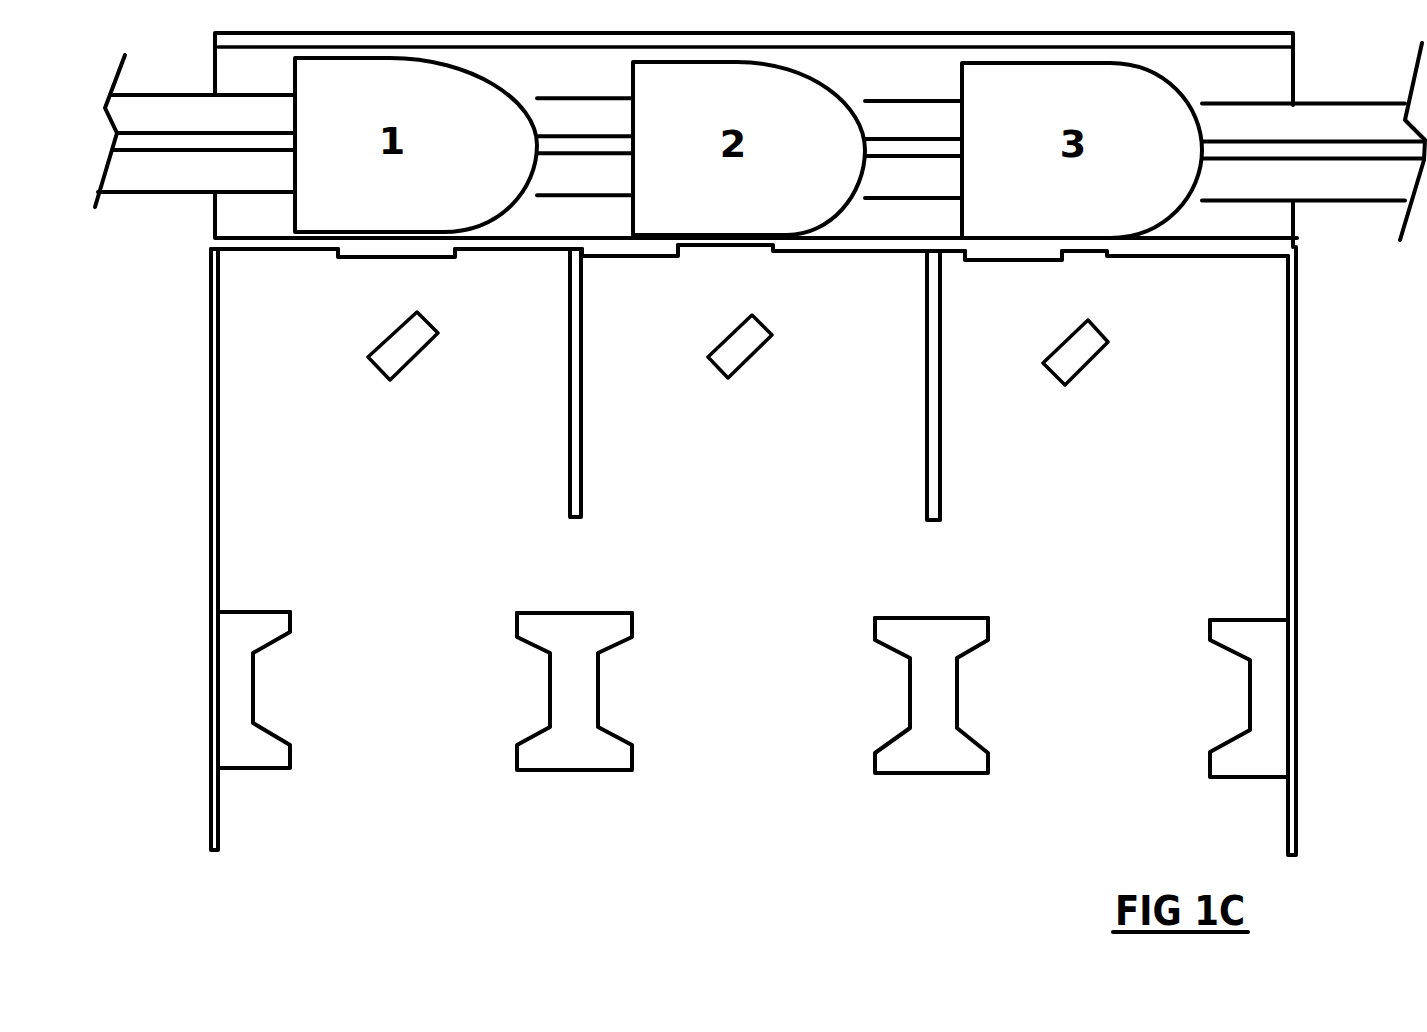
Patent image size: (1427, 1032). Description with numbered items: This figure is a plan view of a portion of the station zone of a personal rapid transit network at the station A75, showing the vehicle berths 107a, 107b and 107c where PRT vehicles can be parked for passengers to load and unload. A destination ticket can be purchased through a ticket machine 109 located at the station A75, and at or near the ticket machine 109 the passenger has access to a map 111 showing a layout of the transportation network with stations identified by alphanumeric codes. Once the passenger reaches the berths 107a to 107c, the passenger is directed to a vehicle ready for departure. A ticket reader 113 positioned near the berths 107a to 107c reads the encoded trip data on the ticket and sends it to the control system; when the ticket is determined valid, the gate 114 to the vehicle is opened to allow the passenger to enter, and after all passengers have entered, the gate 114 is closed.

The vehicle berth 107a is at (317, 332).
The vehicle berth 107b is at (675, 390).
The vehicle berth 107c is at (1197, 417).
The ticket machine 109 is at (1248, 687).
The map 111 is at (1230, 620).
The ticket reader 113 is at (1135, 360).
The gate 114 is at (1042, 265).
The station A75 is at (1300, 408).